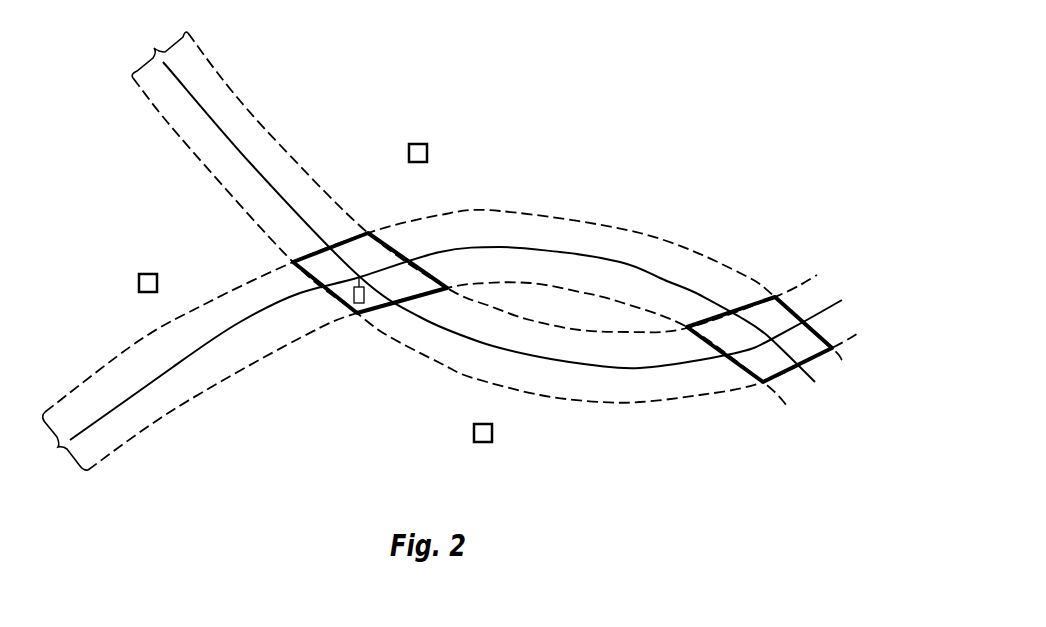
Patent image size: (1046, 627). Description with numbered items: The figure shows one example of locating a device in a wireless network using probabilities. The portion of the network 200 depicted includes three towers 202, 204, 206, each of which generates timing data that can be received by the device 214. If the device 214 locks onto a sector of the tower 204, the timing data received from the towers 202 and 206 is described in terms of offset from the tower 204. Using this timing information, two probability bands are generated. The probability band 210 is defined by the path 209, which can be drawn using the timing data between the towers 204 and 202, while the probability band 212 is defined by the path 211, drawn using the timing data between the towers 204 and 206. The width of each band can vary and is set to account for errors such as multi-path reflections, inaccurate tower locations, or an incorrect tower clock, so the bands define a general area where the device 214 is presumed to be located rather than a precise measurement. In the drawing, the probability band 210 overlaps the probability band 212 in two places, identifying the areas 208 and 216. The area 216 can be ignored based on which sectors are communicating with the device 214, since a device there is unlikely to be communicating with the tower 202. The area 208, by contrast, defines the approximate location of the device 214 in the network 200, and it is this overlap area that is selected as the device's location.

The network 200 is at (366, 459).
The tower 202 is at (150, 273).
The tower 204 is at (422, 143).
The tower 206 is at (483, 442).
The area 208 is at (393, 250).
The path 209 is at (252, 165).
The probability band 210 is at (154, 48).
The path 211 is at (178, 367).
The probability band 212 is at (58, 447).
The device 214 is at (359, 303).
The area 216 is at (757, 302).